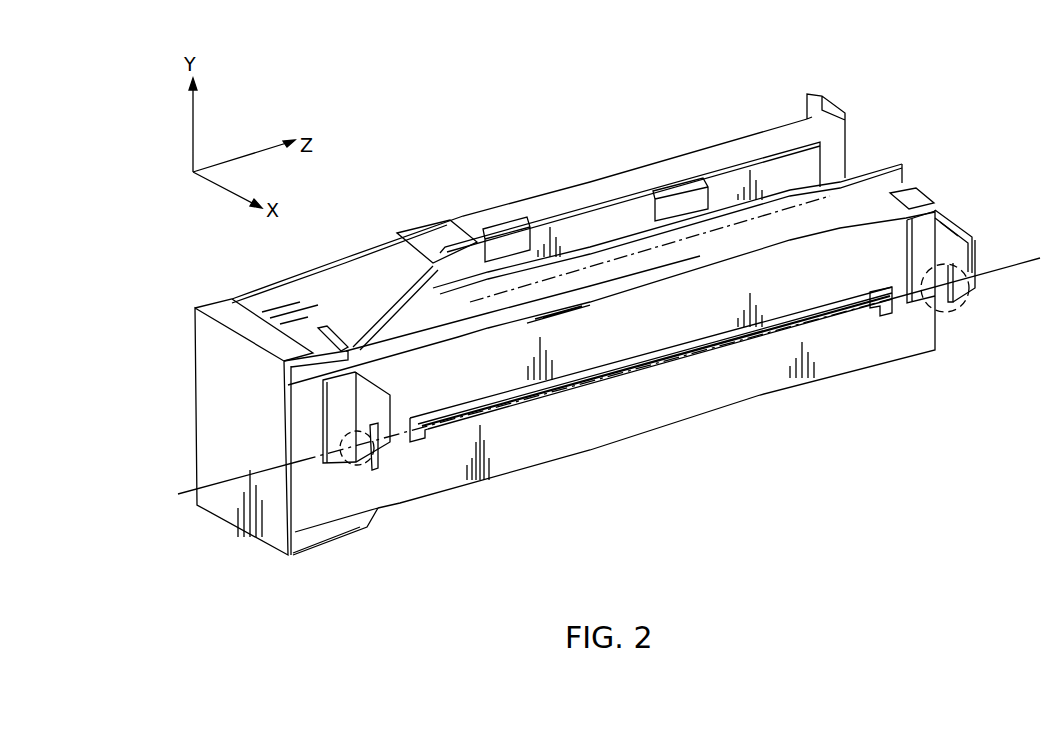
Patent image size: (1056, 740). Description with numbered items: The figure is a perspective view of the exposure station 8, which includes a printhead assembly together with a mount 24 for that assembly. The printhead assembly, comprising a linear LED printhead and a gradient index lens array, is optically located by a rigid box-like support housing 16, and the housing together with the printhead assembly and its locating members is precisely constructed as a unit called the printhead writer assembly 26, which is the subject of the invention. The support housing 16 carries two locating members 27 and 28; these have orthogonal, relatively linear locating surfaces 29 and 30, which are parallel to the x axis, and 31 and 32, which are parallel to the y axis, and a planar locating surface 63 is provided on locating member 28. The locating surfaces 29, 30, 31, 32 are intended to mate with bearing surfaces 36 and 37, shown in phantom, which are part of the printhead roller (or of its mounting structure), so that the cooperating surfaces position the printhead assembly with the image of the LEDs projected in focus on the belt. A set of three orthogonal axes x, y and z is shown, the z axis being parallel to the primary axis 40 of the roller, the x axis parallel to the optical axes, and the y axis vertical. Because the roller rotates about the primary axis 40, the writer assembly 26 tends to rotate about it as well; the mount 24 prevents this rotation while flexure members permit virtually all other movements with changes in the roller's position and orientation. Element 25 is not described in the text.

The exposure station 8 is at (964, 153).
The rigid box-like support housing 16 is at (652, 412).
The mount 24 is at (594, 178).
The upper rail 25 is at (707, 168).
The printhead writer assembly 26 is at (845, 218).
The locating member 27 is at (365, 401).
The locating member 28 is at (968, 230).
The locating surface 29 is at (378, 448).
The locating surface 30 is at (956, 274).
The locating surface 31 is at (377, 470).
The locating surface 32 is at (953, 303).
The bearing surface 36 is at (381, 463).
The bearing surface 37 is at (970, 308).
The primary axis 40 is at (589, 376).
The planar locating surface 63 is at (944, 240).